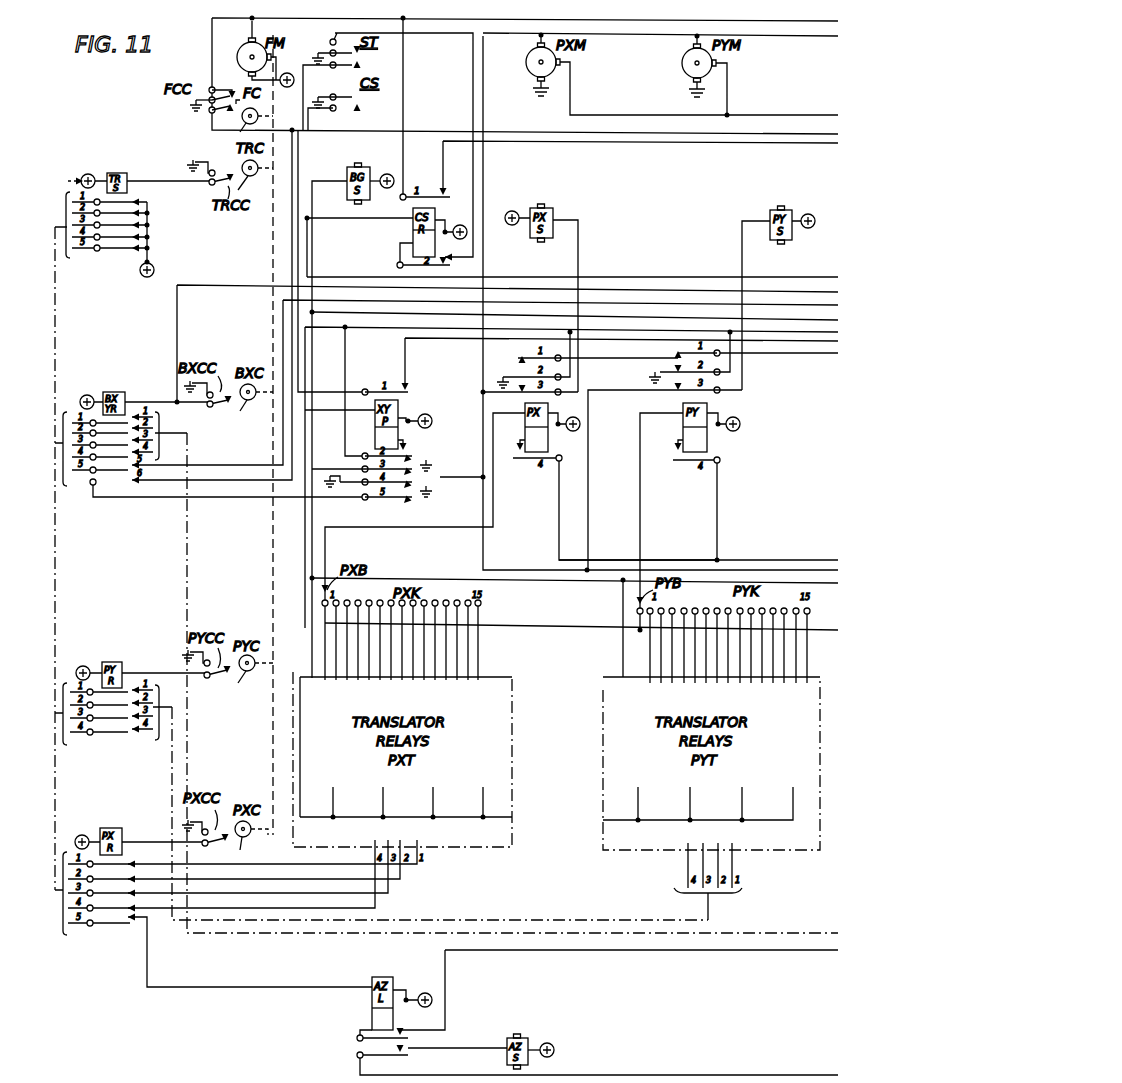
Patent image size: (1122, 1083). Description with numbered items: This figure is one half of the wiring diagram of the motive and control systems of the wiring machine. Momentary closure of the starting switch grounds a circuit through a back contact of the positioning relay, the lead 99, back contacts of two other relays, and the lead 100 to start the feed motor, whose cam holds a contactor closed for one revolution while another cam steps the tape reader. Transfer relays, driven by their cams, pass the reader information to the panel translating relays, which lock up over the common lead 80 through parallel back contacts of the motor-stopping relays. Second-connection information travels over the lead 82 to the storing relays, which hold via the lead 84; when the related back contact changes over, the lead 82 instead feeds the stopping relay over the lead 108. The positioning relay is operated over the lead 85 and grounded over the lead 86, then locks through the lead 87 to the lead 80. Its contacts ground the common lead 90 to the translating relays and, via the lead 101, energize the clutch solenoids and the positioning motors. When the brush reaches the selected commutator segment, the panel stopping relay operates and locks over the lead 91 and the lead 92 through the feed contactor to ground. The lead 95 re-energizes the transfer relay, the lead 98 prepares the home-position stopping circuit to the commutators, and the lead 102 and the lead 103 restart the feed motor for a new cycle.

The lead 80 is at (442, 333).
The lead 82 is at (808, 303).
The lead 84 is at (598, 952).
The lead 85 is at (212, 499).
The lead 86 is at (298, 157).
The lead 87 is at (345, 374).
The common lead 90 is at (463, 578).
The lead 91 is at (558, 513).
The lead 92 is at (522, 130).
The lead 95 is at (177, 318).
The lead 98 is at (538, 626).
The lead 99 is at (408, 374).
The lead 100 is at (440, 22).
The lead 101 is at (801, 30).
The lead 102 is at (815, 353).
The lead 103 is at (710, 144).
The lead 108 is at (606, 277).